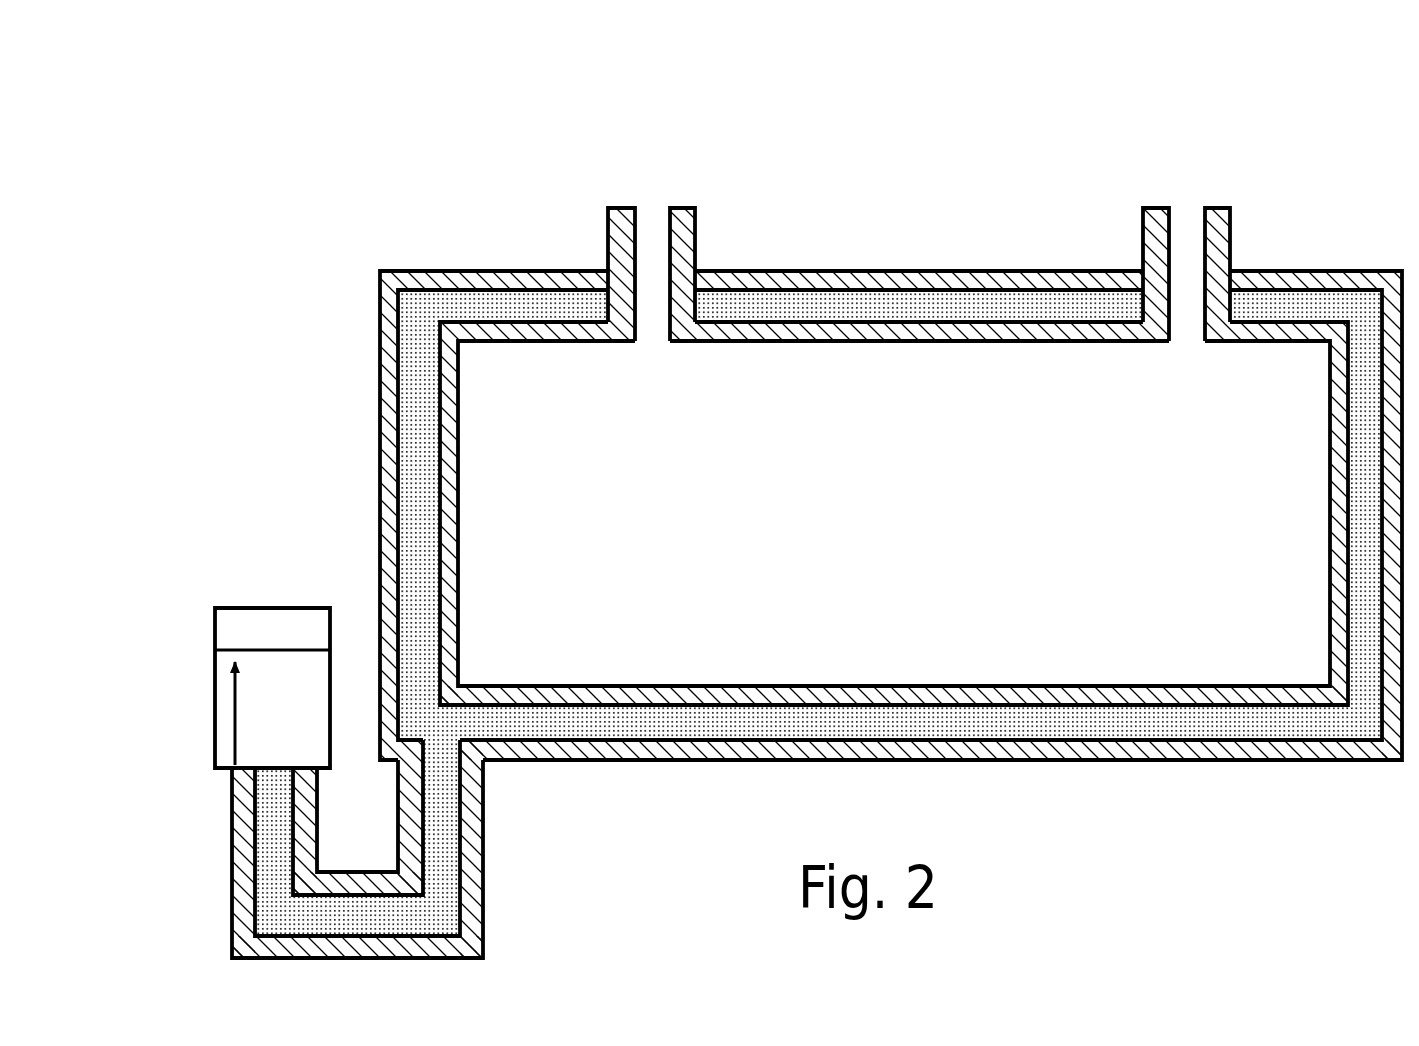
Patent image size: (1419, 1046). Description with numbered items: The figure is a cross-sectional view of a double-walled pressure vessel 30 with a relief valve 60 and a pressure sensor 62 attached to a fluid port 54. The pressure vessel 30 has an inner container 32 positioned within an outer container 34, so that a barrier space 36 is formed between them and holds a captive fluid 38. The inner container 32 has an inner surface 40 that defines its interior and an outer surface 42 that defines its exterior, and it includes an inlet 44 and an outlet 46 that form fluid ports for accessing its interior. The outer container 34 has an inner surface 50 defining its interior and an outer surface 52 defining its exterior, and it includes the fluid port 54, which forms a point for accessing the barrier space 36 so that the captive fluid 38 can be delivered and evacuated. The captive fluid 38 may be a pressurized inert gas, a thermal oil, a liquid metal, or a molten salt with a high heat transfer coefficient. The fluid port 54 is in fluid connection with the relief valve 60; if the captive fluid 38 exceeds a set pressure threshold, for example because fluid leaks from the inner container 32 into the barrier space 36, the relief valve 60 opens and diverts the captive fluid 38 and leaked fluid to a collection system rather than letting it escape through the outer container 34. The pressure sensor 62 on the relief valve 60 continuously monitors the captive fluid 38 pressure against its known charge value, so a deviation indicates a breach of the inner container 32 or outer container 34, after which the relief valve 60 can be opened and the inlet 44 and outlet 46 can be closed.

The pressure vessel 30 is at (766, 499).
The inner container 32 is at (830, 330).
The outer container 34 is at (913, 278).
The barrier space 36 is at (423, 308).
The captive fluid 38 is at (417, 345).
The inner surface 40 is at (960, 347).
The outer surface 42 is at (1001, 316).
The inlet 44 is at (651, 230).
The outlet 46 is at (1182, 245).
The inner surface 50 is at (772, 294).
The outer surface 52 is at (752, 264).
The fluid port 54 is at (443, 819).
The relief valve 60 is at (277, 723).
The pressure sensor 62 is at (278, 632).